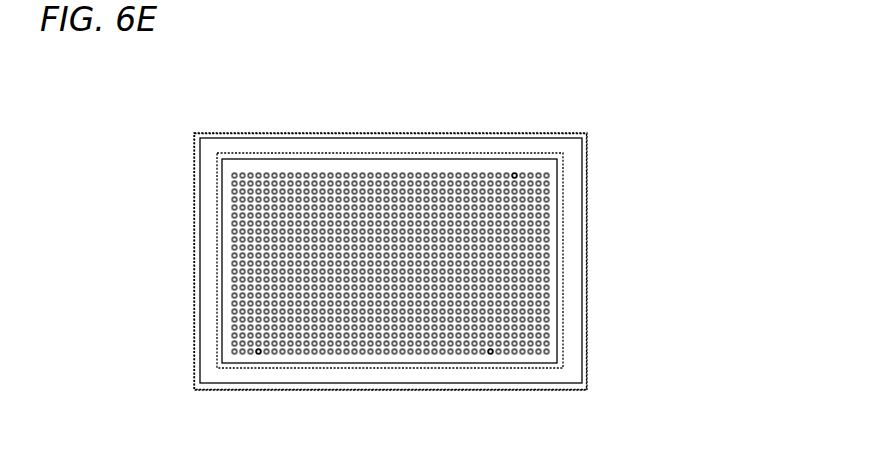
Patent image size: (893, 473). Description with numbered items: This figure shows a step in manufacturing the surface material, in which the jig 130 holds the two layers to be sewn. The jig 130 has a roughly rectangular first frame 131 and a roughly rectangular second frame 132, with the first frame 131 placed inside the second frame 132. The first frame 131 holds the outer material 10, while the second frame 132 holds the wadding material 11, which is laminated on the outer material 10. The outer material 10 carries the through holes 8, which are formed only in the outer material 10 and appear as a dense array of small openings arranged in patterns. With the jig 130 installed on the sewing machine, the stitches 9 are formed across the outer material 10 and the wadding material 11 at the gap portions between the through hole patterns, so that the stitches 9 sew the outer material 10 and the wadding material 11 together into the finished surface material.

The jig 130 is at (250, 117).
The first frame 131 is at (289, 152).
The second frame 132 is at (467, 136).
The wadding material 11 is at (333, 137).
The outer material 10 is at (383, 158).
The stitches 9 is at (415, 178).
The through holes 8 is at (514, 178).